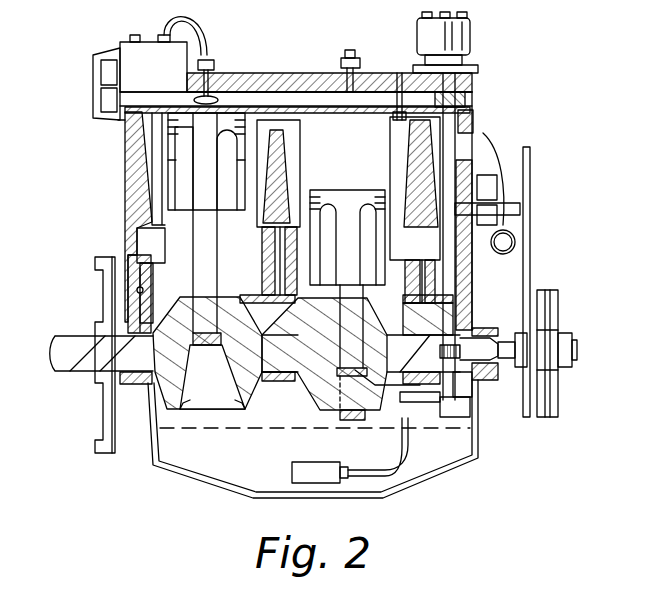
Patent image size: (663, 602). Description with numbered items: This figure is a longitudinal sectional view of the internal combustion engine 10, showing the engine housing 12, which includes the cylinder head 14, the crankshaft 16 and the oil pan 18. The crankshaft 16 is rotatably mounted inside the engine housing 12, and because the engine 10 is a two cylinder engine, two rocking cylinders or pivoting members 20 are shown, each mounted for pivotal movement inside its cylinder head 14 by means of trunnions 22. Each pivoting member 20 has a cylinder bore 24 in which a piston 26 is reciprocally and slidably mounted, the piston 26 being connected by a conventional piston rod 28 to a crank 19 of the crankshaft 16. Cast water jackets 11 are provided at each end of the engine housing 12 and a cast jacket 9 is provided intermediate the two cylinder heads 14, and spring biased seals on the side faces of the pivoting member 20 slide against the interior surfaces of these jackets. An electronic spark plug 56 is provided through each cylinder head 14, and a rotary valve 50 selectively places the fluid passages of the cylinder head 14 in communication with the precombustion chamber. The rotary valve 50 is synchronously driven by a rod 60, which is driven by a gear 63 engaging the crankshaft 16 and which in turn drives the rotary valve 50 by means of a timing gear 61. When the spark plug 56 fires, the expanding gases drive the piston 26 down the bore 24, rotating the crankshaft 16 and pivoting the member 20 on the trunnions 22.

The cast jacket 9 is at (262, 358).
The internal combustion engine 10 is at (535, 46).
The cast water jackets 11 is at (135, 122).
The engine housing 12 is at (480, 106).
The cylinder head 14 is at (246, 73).
The crankshaft 16 is at (92, 340).
The oil pan 18 is at (205, 462).
The crank 19 is at (232, 297).
The pivoting member 20 is at (399, 92).
The trunnions 22 is at (140, 245).
The cylinder bore 24 is at (492, 140).
The piston 26 is at (195, 135).
The piston rod 28 is at (375, 385).
The rotary valve 50 is at (312, 100).
The electronic spark plug 56 is at (212, 60).
The rod 60 is at (500, 310).
The timing gear 61 is at (470, 100).
The gear 63 is at (470, 405).